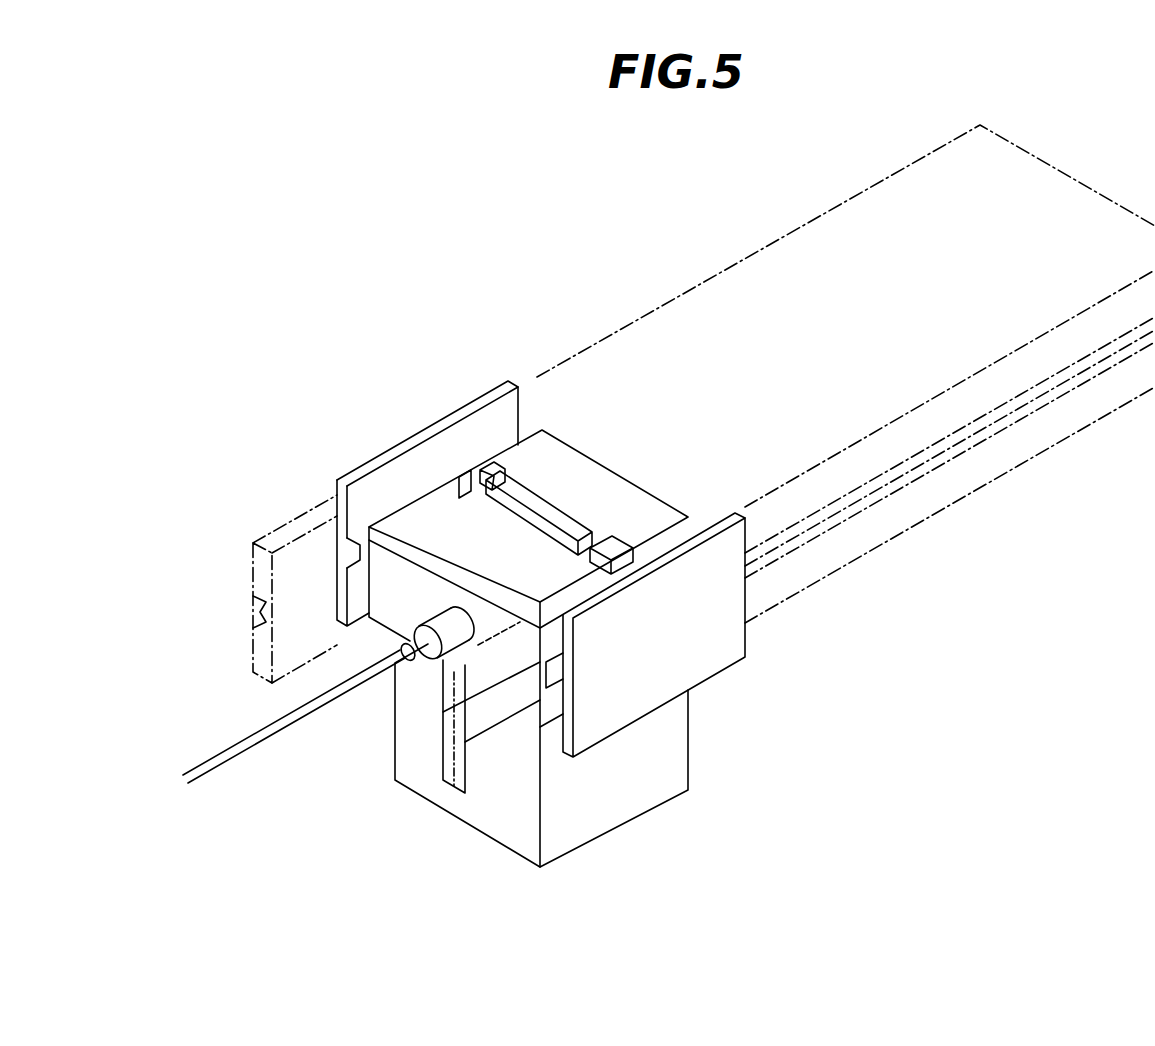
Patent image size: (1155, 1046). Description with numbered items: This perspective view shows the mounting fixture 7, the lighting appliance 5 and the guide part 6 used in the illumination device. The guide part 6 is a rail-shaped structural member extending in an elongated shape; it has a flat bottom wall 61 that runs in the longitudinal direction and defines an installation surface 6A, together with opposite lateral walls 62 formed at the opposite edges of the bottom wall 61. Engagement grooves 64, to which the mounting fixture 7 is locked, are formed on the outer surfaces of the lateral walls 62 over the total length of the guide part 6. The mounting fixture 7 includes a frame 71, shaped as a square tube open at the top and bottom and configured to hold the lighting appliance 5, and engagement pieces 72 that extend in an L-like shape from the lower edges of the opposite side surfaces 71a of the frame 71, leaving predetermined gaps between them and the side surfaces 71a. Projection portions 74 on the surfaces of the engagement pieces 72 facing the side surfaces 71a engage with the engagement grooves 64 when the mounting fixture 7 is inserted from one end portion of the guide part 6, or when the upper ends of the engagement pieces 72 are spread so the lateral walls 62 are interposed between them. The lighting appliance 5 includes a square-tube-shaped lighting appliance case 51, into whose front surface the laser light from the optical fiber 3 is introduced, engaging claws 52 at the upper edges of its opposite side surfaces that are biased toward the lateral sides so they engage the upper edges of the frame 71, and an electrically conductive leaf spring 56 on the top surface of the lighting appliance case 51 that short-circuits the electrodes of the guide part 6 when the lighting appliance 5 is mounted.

The optical fiber 3 is at (260, 733).
The lighting appliance 5 is at (553, 755).
The lighting appliance case 51 is at (467, 798).
The engaging claws 52 is at (628, 548).
The leaf spring 56 is at (547, 510).
The guide part 6 is at (846, 251).
The bottom wall 61 is at (846, 251).
The installation surface 6A is at (690, 325).
The lateral walls 62 is at (665, 476).
The engagement grooves 64 is at (258, 609).
The mounting fixture 7 is at (541, 588).
The frame 71 is at (541, 588).
The side surfaces 71a is at (508, 420).
The engagement pieces 72 is at (520, 598).
The projection portions 74 is at (357, 553).